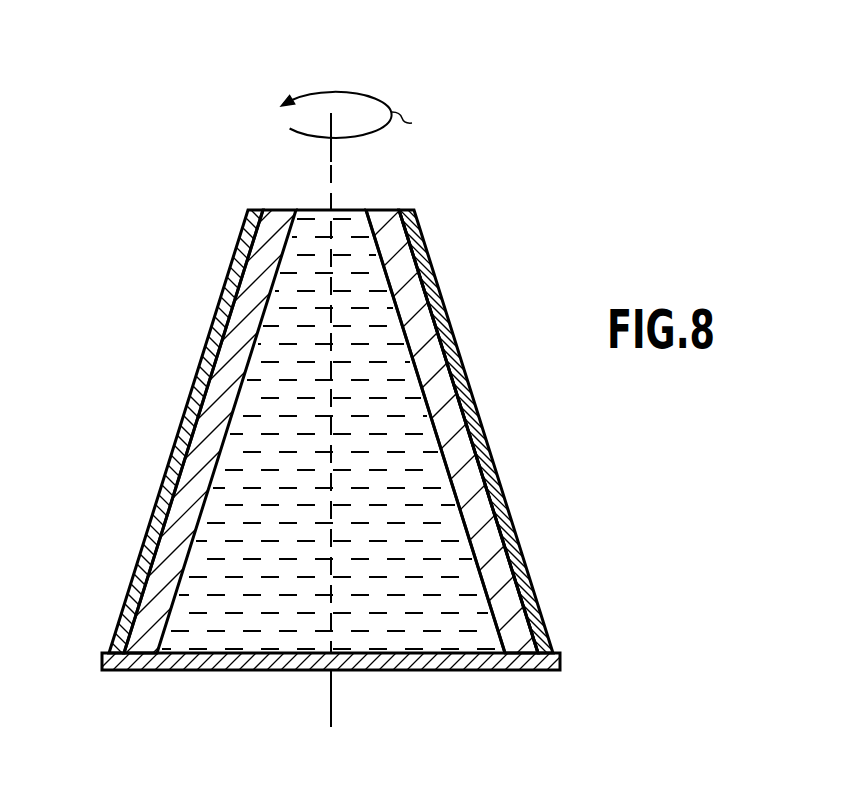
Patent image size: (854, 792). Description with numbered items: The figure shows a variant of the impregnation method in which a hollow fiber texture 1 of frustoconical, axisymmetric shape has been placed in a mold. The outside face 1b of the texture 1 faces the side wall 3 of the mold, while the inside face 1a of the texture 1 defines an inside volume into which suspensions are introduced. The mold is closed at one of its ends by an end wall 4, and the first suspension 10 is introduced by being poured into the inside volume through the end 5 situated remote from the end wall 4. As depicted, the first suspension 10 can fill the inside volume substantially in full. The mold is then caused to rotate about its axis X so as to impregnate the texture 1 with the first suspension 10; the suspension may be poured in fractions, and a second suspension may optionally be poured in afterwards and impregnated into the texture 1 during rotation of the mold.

The fiber texture 1 is at (450, 430).
The inside face 1a is at (405, 326).
The outside face 1b is at (417, 262).
The side wall 3 is at (507, 522).
The end wall 4 is at (237, 670).
The end 5 is at (312, 208).
The first suspension 10 is at (290, 360).
The axis of rotation X is at (333, 160).